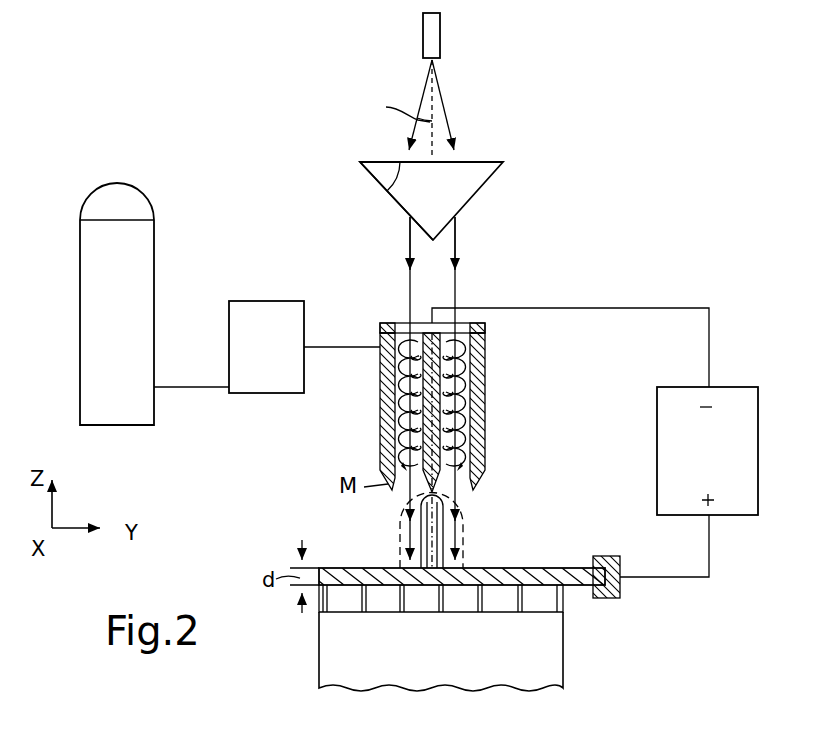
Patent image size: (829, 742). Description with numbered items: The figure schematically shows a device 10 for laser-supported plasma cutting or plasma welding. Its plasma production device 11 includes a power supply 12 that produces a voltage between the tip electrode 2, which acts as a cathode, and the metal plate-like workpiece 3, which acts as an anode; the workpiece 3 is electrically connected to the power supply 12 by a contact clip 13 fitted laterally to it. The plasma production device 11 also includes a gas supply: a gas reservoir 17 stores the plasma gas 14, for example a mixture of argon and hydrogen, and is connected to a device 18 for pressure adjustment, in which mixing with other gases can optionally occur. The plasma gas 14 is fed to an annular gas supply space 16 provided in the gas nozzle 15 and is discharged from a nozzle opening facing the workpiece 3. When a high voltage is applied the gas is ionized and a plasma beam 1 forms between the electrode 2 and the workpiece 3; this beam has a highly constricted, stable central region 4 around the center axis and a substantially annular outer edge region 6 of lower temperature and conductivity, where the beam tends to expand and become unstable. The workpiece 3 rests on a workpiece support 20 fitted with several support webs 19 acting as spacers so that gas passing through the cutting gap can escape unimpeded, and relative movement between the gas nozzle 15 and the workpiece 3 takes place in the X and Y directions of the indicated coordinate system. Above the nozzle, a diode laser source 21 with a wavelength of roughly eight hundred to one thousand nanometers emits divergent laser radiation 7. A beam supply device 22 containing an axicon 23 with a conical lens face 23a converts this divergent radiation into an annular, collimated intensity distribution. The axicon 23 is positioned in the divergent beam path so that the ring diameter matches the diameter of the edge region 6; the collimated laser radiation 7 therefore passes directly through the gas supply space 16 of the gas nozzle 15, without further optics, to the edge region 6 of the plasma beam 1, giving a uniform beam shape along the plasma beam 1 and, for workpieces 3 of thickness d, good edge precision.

The plasma beam 1 is at (490, 523).
The tip electrode 2 is at (427, 432).
The workpiece 3 is at (536, 576).
The central region 4 is at (400, 545).
The edge region 6 is at (421, 553).
The laser radiation 7 is at (447, 100).
The device 10 is at (650, 136).
The plasma production device 11 is at (548, 290).
The power supply 12 is at (740, 429).
The contact clip 13 is at (608, 592).
The plasma gas 14 is at (462, 388).
The gas nozzle 15 is at (388, 378).
The gas supply space 16 is at (462, 337).
The gas reservoir 17 is at (147, 253).
The device for pressure adjustment 18 is at (265, 308).
The support webs 19 is at (322, 600).
The workpiece support 20 is at (347, 657).
The laser source 21 is at (423, 33).
The beam supply device 22 is at (498, 127).
The axicon 23 is at (466, 189).
The conical lens face 23a is at (393, 210).